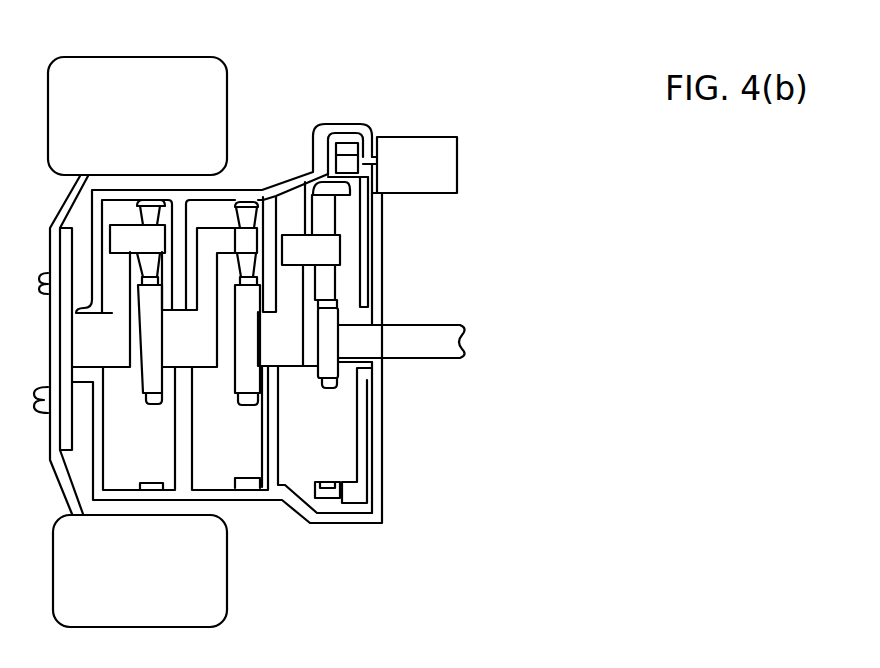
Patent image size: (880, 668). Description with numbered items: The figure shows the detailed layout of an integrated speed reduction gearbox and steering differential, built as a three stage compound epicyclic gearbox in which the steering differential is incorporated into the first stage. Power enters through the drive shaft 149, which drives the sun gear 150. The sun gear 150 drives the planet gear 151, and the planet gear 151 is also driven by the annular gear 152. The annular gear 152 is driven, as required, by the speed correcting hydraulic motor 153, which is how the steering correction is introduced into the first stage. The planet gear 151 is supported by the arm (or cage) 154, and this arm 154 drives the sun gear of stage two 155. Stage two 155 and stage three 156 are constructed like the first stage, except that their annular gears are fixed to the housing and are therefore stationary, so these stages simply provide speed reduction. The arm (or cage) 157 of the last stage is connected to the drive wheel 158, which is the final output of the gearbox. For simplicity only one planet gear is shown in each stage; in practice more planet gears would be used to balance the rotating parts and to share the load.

The drive shaft 149 is at (440, 356).
The sun gear 150 is at (332, 368).
The planet gear 151 is at (338, 280).
The annular gear 152 is at (323, 482).
The speed correcting hydraulic motor 153 is at (425, 183).
The arm (or cage) 154 is at (311, 251).
The stage two 155 is at (240, 455).
The stage three 156 is at (151, 455).
The arm (or cage) of the last stage 157 is at (137, 242).
The drive wheel 158 is at (121, 172).